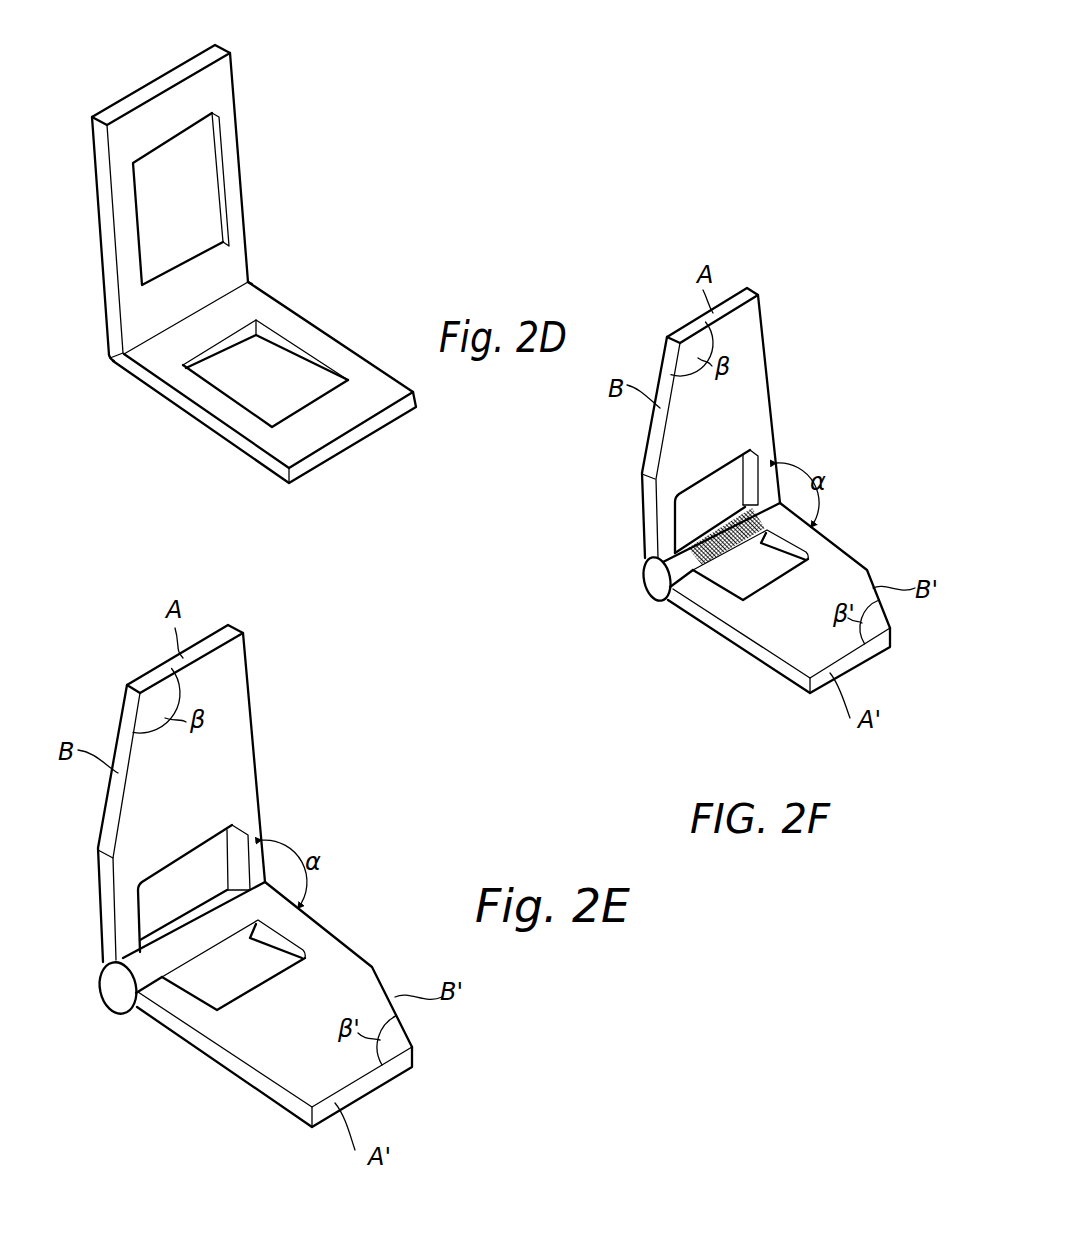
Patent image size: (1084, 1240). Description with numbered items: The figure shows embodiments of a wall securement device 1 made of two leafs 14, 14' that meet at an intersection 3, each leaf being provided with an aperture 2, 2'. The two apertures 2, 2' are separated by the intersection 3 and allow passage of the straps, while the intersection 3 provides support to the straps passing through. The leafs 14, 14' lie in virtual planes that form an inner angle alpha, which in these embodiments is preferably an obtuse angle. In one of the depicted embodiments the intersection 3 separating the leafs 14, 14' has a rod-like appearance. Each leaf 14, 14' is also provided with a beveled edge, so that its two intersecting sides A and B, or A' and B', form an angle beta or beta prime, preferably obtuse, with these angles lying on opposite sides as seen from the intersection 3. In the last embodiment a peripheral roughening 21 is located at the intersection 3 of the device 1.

In FIG. 2D, the wall securement device 1 is at (367, 160).
In FIG. 2E, the wall securement device 1 is at (401, 778).
In FIG. 2F, the wall securement device 1 is at (884, 416).
In FIG. 2D, the aperture 2 is at (212, 199).
In FIG. 2E, the aperture 2 is at (194, 866).
In FIG. 2F, the aperture 2 is at (716, 482).
In FIG. 2D, the aperture 2' is at (286, 359).
In FIG. 2E, the aperture 2' is at (234, 988).
In FIG. 2F, the aperture 2' is at (752, 584).
In FIG. 2D, the intersection 3 is at (255, 280).
In FIG. 2E, the intersection 3 is at (188, 953).
In FIG. 2F, the intersection 3 is at (718, 558).
In FIG. 2D, the leaf 14 is at (208, 203).
In FIG. 2E, the leaf 14 is at (224, 793).
In FIG. 2F, the leaf 14 is at (749, 425).
In FIG. 2D, the leaf 14' is at (272, 387).
In FIG. 2E, the leaf 14' is at (296, 1014).
In FIG. 2F, the leaf 14' is at (805, 608).
In FIG. 2F, the peripheral roughening 21 is at (700, 555).